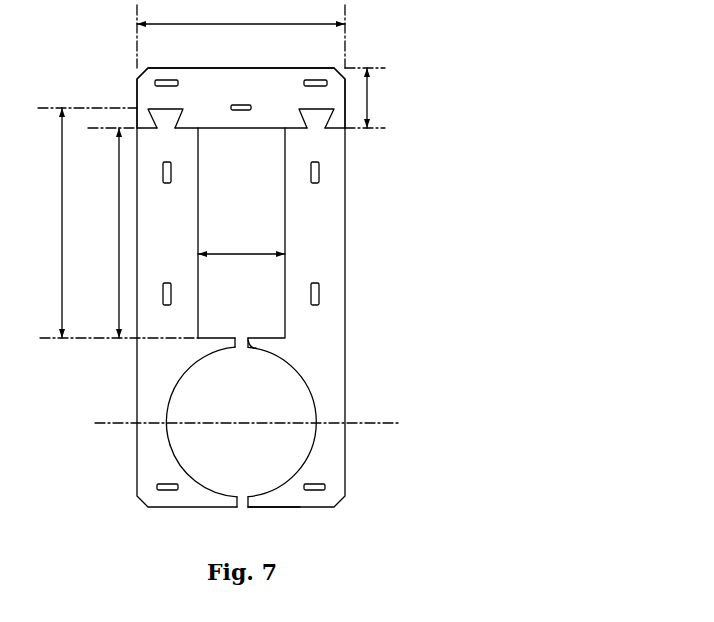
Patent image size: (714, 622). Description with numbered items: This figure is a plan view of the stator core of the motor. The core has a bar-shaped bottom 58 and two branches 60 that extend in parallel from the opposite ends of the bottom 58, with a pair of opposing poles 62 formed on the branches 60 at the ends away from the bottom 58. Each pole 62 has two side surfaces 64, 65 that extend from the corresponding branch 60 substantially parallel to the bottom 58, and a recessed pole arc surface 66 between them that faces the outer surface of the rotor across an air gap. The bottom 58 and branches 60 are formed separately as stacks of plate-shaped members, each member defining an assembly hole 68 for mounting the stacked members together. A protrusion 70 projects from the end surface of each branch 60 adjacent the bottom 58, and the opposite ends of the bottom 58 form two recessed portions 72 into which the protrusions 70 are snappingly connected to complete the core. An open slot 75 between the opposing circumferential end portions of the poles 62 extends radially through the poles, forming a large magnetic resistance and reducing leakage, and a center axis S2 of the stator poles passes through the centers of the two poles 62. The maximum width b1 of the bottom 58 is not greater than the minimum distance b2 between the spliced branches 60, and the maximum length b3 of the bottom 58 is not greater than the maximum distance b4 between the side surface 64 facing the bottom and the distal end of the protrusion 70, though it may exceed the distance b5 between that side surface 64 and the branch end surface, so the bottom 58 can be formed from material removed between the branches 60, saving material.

The bottom 58 is at (220, 100).
The branch 60 is at (323, 248).
The pole 62 is at (178, 373).
The side surface 64 is at (255, 336).
The side surface 65 is at (257, 508).
The pole arc surface 66 is at (170, 445).
The assembly hole 68 is at (327, 489).
The protrusion 70 is at (313, 118).
The recessed portion 72 is at (160, 108).
The open slot 75 is at (243, 346).
The center axis of the stator pole S2 is at (266, 423).
The maximum width of the bottom b1 is at (373, 98).
The minimum distance between the two branches b2 is at (241, 244).
The maximum length of the bottom b3 is at (241, 34).
The maximum distance b4 is at (111, 223).
The distance b5 is at (110, 233).